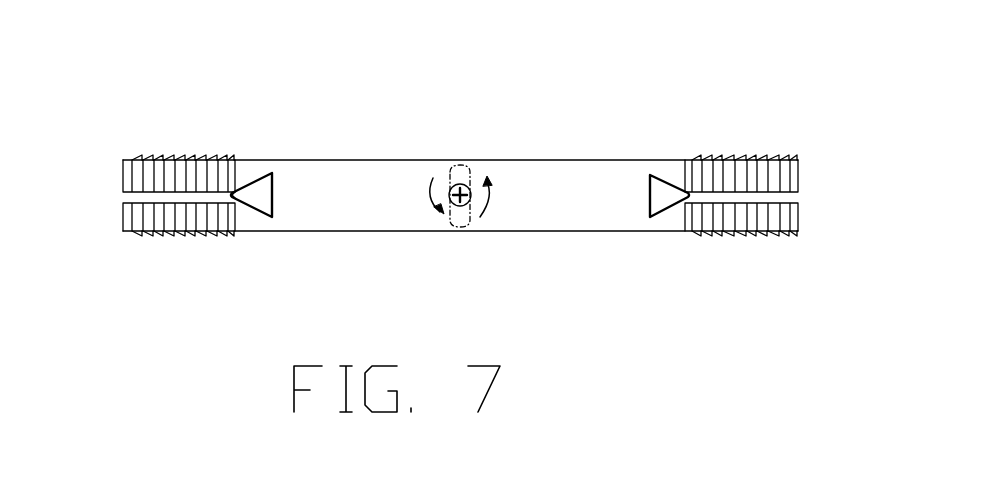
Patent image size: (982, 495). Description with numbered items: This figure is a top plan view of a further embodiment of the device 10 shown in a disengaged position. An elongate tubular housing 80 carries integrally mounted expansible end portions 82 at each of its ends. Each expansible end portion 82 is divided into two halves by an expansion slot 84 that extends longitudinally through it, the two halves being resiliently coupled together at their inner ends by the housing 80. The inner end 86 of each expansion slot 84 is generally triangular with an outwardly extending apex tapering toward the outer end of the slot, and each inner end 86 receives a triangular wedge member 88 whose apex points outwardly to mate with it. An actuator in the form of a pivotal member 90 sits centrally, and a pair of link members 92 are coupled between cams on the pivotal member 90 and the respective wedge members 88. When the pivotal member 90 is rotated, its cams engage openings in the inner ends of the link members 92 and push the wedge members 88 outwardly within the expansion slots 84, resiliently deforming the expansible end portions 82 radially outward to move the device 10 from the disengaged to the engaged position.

The fastener assembly 10 is at (358, 86).
The elongate tubular housing 80 is at (565, 170).
The expansible end portions 82 is at (141, 225).
The expansion slot 84 is at (120, 190).
The inner end 86 is at (278, 184).
The wedge member 88 is at (258, 186).
The pivotal member 90 is at (456, 189).
The link members 92 is at (277, 200).